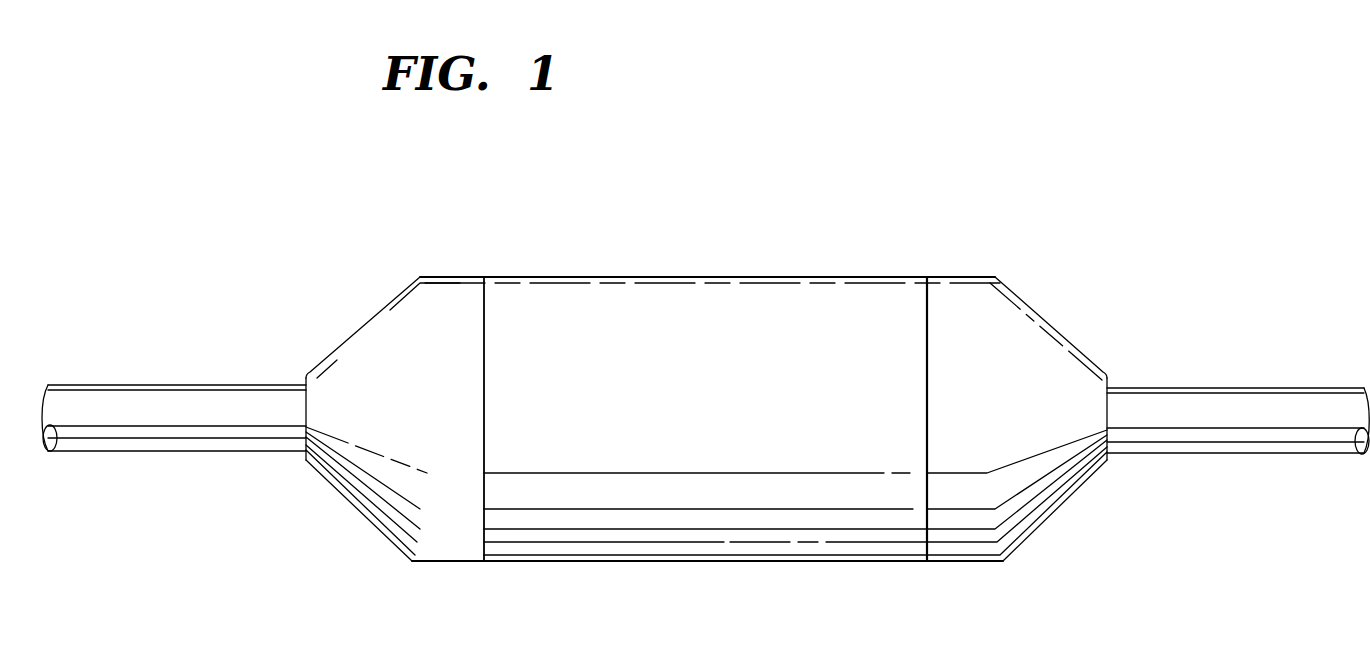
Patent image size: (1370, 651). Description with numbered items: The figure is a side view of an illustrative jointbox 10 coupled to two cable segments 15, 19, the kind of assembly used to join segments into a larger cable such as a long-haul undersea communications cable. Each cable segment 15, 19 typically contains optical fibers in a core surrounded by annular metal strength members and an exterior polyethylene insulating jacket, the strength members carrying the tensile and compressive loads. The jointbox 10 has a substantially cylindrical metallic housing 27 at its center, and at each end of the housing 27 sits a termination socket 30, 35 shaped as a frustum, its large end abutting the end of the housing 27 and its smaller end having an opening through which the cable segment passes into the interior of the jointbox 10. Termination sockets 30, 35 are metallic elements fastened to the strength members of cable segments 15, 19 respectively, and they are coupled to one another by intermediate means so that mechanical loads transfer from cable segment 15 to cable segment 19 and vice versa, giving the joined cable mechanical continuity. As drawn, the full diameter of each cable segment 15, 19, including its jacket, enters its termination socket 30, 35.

The jointbox 10 is at (706, 356).
The cable segment 15 is at (172, 402).
The cable segment 19 is at (1245, 405).
The housing 27 is at (665, 342).
The termination socket 30 is at (387, 348).
The termination socket 35 is at (1027, 350).